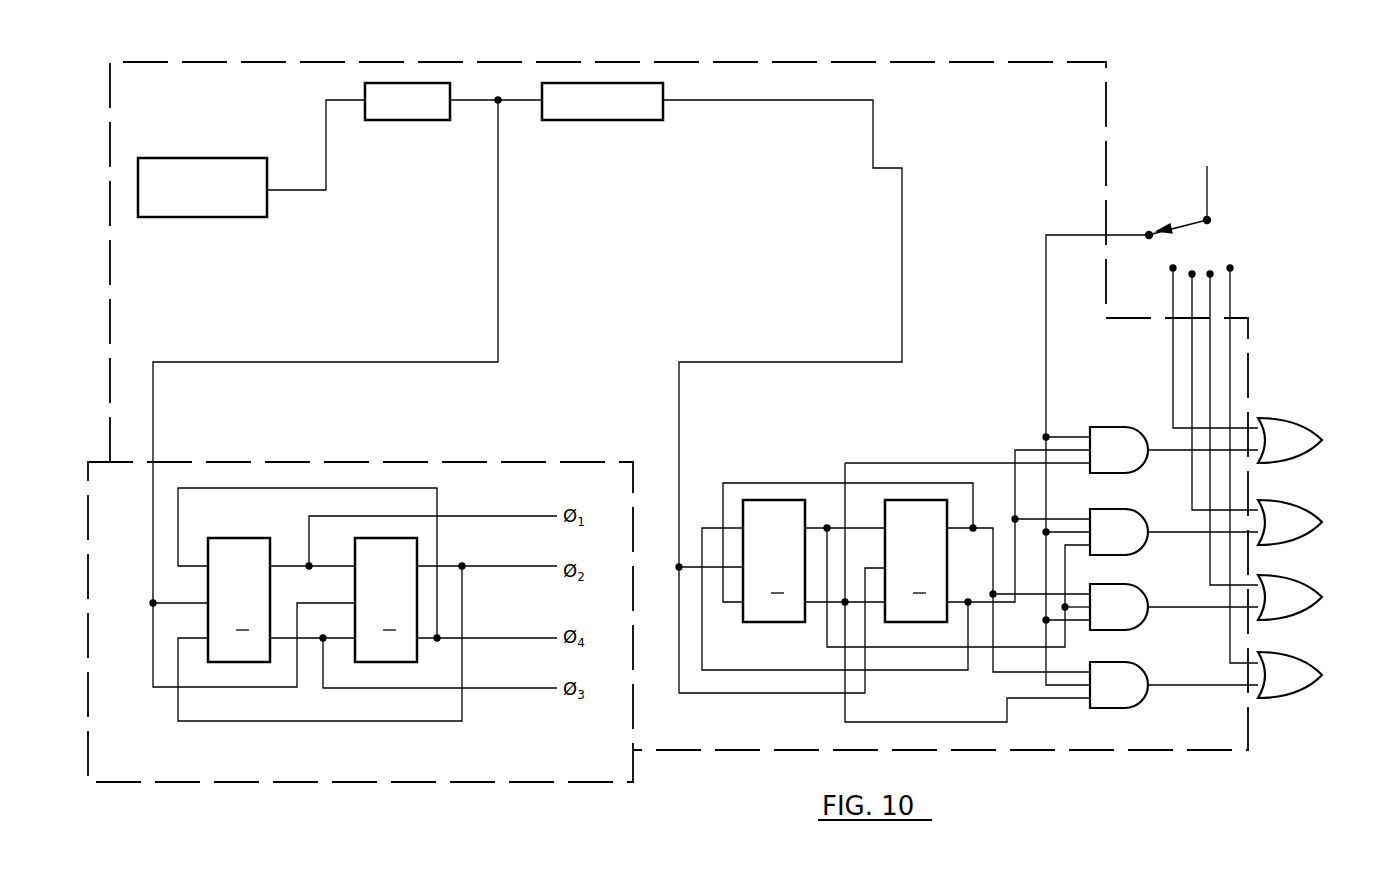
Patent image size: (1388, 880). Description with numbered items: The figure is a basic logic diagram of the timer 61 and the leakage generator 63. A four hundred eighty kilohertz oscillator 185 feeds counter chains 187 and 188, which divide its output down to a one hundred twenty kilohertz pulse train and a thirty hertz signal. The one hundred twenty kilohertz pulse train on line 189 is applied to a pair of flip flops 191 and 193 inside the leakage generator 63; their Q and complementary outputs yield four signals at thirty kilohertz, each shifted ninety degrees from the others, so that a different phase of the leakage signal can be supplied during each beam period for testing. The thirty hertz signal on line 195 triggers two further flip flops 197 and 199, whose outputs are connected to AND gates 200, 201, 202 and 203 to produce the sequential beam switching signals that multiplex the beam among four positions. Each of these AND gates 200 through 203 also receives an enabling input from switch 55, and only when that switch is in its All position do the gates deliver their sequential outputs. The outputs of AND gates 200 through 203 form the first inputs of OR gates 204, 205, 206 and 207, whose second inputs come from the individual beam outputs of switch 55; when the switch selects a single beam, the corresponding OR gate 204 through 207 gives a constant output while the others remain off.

The switch 55 is at (1205, 238).
The timer 61 is at (725, 62).
The leakage generator 63 is at (510, 461).
The 480 Kilo Hertz oscillator 185 is at (181, 158).
The counter chain 187 is at (421, 120).
The counter chain 188 is at (653, 120).
The line 189 is at (410, 362).
The flip flop 191 is at (245, 538).
The flip flop 193 is at (368, 538).
The line 195 is at (800, 362).
The flip flop 197 is at (785, 500).
The flip flop 199 is at (913, 500).
The AND gate 200 is at (1118, 427).
The AND gate 201 is at (1116, 509).
The AND gate 202 is at (1118, 584).
The AND gate 203 is at (1122, 662).
The OR gate 204 is at (1275, 418).
The OR gate 205 is at (1275, 500).
The OR gate 206 is at (1275, 575).
The OR gate 207 is at (1275, 652).